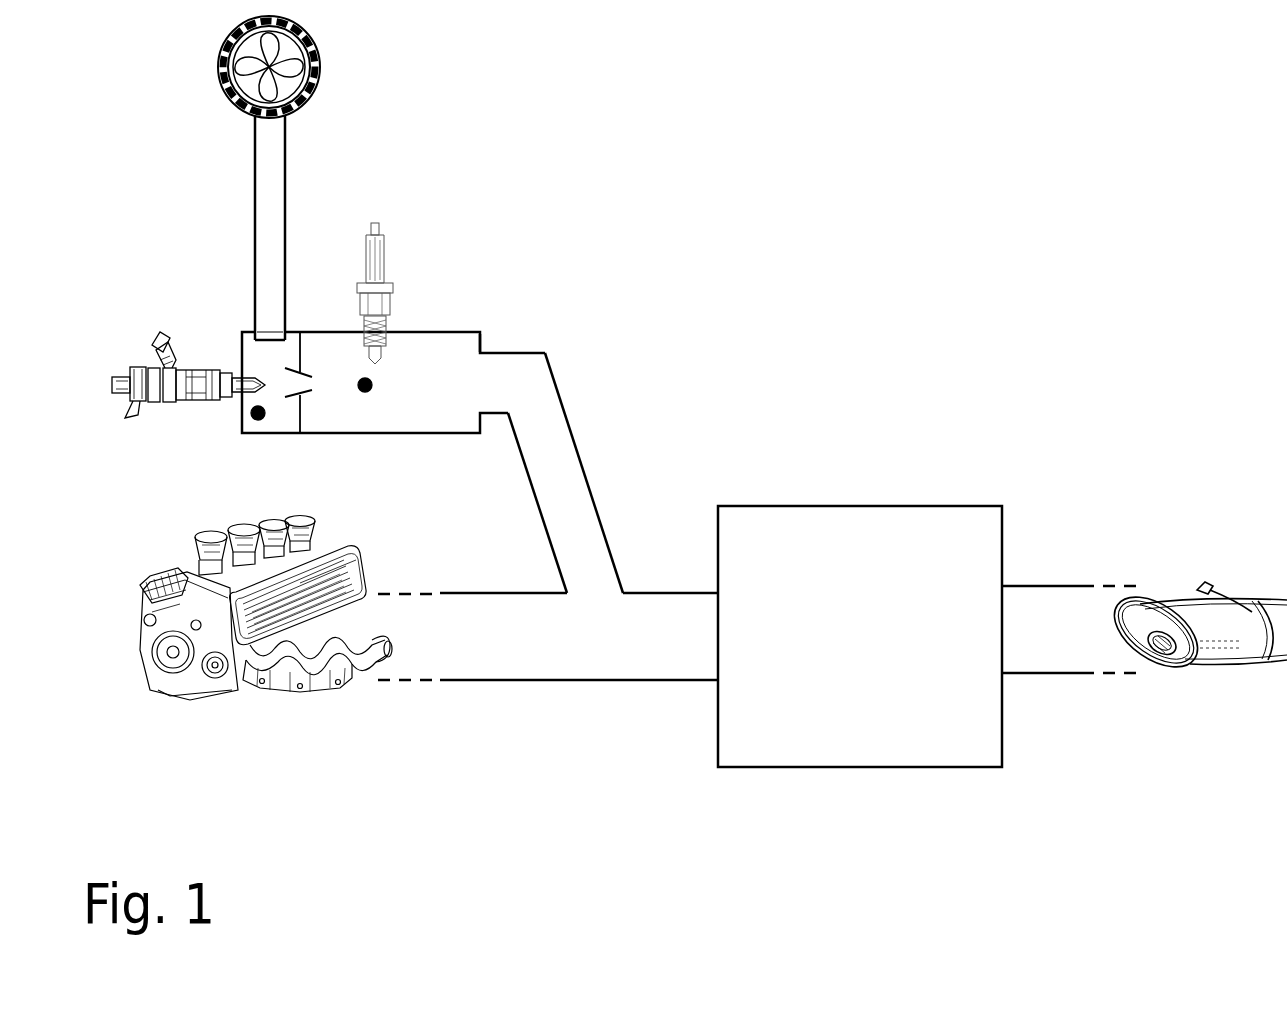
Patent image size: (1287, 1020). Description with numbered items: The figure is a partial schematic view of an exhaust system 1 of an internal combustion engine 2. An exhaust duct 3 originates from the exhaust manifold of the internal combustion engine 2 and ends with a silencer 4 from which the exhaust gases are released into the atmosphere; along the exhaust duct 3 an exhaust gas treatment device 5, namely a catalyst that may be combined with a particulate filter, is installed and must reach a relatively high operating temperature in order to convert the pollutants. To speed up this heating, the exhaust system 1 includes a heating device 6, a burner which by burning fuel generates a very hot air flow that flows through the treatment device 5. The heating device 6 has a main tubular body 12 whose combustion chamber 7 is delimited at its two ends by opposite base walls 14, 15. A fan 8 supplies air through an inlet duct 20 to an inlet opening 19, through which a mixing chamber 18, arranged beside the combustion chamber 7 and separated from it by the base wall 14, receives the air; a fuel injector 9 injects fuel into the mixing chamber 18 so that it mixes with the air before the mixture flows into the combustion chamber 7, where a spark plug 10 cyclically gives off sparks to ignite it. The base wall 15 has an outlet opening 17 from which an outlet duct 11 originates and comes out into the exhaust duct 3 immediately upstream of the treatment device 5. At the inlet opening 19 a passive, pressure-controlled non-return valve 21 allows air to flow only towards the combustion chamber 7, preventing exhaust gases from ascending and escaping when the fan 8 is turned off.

The exhaust system 1 is at (1156, 140).
The internal combustion engine 2 is at (240, 695).
The exhaust duct 3 is at (615, 685).
The silencer 4 is at (1211, 645).
The exhaust gas treatment device 5 is at (957, 768).
The heating device 6 is at (470, 193).
The combustion chamber 7 is at (365, 395).
The fan 8 is at (265, 68).
The fuel injector 9 is at (166, 398).
The spark plug 10 is at (380, 282).
The outlet duct 11 is at (543, 527).
The main tubular body 12 is at (428, 437).
The base wall 14 is at (302, 345).
The base wall 15 is at (484, 348).
The outlet opening 17 is at (488, 380).
The mixing chamber 18 is at (258, 425).
The inlet opening 19 is at (274, 305).
The inlet duct 20 is at (255, 150).
The non-return valve 21 is at (268, 333).